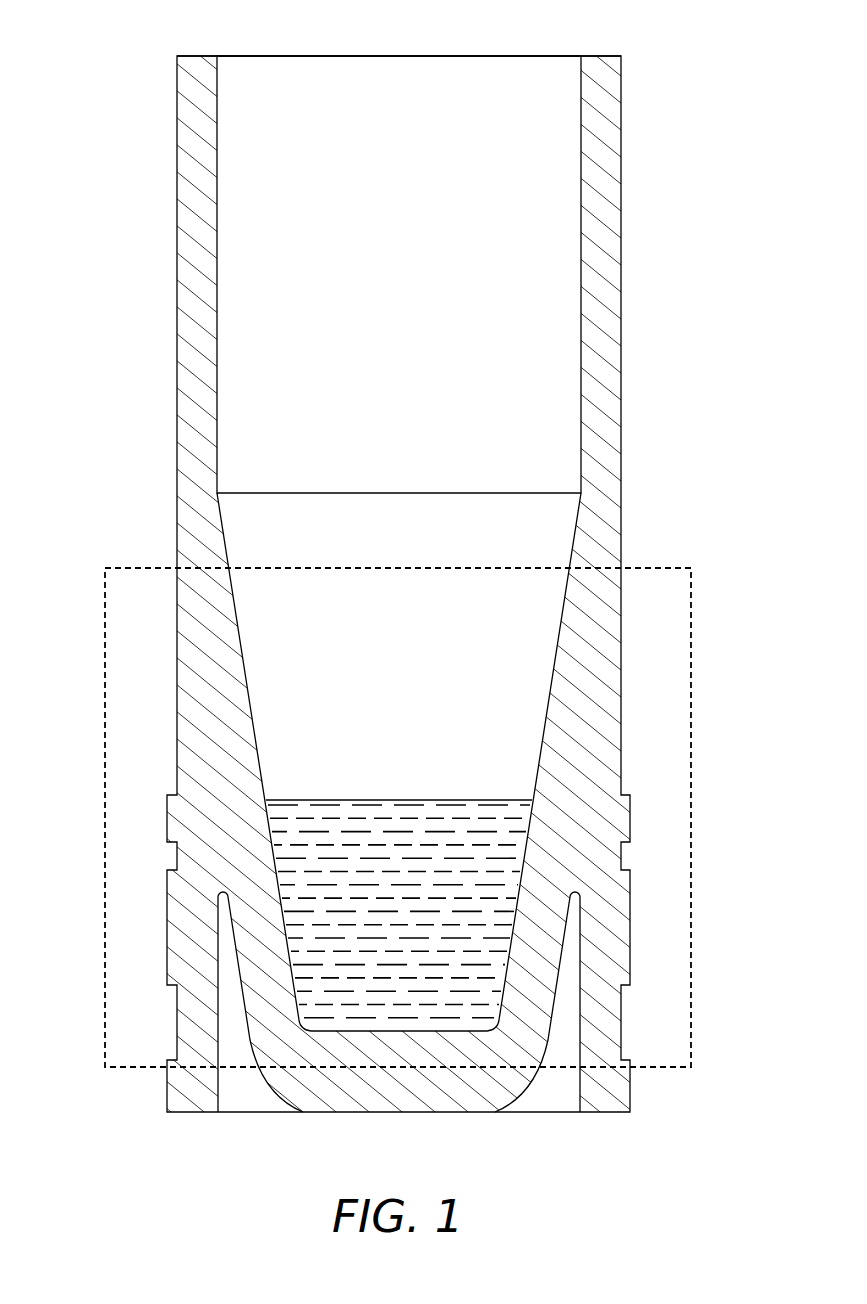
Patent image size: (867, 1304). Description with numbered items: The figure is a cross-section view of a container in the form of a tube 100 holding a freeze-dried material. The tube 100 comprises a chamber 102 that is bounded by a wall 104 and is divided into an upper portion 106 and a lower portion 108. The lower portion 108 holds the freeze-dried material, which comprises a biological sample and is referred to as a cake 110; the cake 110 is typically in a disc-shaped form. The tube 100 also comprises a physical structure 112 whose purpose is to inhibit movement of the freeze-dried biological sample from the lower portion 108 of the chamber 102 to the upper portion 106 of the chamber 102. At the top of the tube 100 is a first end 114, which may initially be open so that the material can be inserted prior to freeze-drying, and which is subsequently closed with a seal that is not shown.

The tube 100 is at (187, 92).
The chamber 102 is at (235, 349).
The wall 104 is at (217, 170).
The upper portion 106 is at (717, 55).
The lower portion 108 is at (717, 568).
The cake 110 is at (398, 983).
The physical structure 112 is at (105, 600).
The first end 114 is at (400, 55).